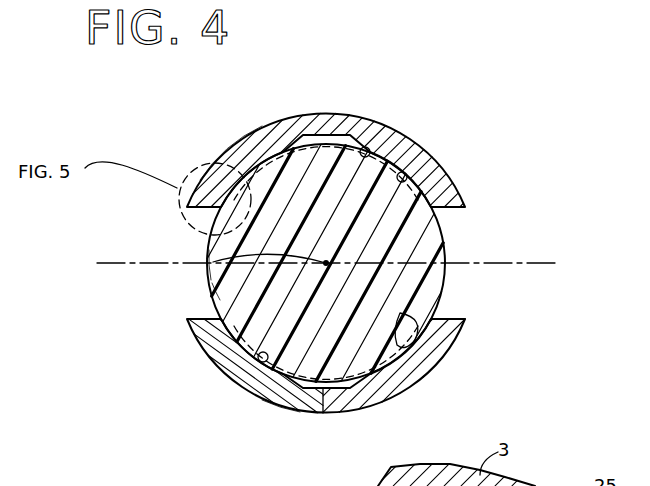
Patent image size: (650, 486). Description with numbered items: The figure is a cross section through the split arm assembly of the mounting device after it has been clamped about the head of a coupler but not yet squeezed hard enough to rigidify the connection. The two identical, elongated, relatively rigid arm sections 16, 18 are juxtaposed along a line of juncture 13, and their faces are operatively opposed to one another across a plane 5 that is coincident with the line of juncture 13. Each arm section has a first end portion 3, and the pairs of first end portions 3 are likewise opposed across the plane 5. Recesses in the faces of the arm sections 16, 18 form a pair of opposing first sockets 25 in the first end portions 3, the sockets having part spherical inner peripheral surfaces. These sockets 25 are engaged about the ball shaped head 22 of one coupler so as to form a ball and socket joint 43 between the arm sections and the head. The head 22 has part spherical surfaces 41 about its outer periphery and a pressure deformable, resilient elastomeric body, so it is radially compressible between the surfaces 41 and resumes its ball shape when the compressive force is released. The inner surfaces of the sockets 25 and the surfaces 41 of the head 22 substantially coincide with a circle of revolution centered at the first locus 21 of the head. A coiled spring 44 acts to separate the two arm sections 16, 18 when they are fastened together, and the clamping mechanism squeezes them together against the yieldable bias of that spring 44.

The first end portions 3 is at (328, 147).
The plane 5 is at (118, 258).
The line of juncture 13 is at (330, 262).
The arm section 16 is at (278, 413).
The arm section 18 is at (250, 125).
The first locus 21 is at (210, 273).
The head 22 is at (208, 291).
The first sockets 25 is at (404, 174).
The part spherical surfaces 41 is at (417, 377).
The ball and socket joint 43 is at (364, 135).
The coiled spring 44 is at (372, 143).